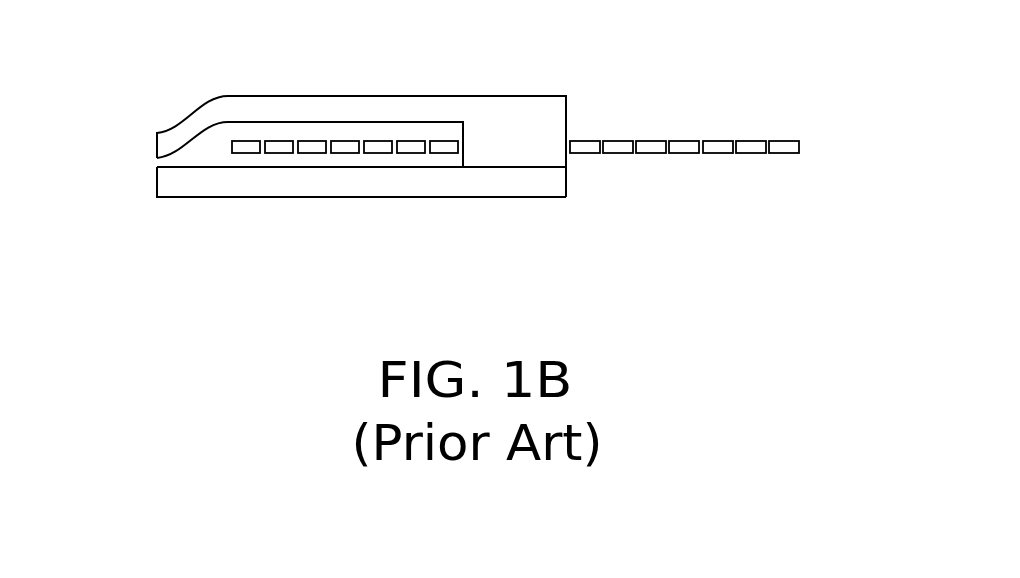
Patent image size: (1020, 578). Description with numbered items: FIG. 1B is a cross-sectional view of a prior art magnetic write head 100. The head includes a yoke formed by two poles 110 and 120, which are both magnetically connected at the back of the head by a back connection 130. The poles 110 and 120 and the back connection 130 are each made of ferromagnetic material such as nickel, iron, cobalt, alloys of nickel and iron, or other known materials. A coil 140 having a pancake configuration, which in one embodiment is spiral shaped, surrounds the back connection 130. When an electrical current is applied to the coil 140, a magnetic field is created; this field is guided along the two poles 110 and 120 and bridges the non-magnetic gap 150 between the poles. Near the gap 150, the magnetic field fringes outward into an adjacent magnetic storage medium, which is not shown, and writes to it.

The prior art device 100 is at (770, 237).
The pole 110 is at (157, 143).
The pole 120 is at (383, 187).
The back connection 130 is at (504, 120).
The coil 140 is at (617, 153).
The non-magnetic gap 150 is at (157, 162).